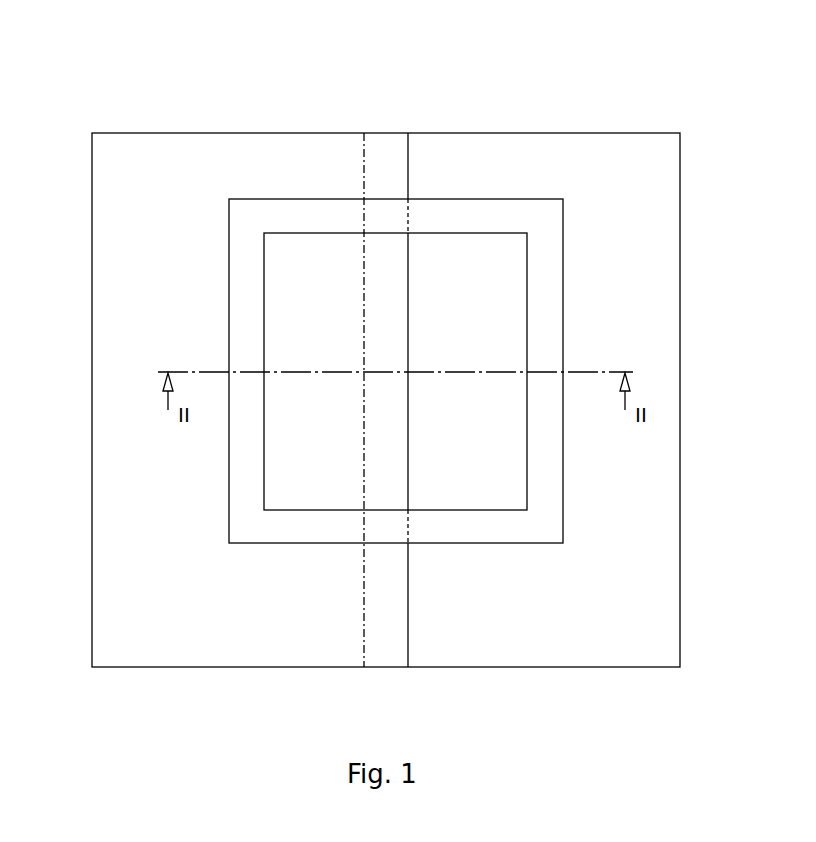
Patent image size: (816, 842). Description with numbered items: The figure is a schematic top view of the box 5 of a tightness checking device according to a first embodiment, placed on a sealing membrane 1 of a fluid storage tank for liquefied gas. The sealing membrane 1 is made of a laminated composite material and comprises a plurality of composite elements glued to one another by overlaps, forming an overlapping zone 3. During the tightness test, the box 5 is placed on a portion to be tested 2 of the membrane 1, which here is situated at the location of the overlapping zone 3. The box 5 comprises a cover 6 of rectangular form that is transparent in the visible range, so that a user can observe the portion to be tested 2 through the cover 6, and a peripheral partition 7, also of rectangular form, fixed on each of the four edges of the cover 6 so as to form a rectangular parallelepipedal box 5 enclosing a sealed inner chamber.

The sealing membrane 1 is at (594, 134).
The portion to be tested 2 is at (466, 283).
The overlapping zone 3 is at (388, 167).
The box 5 is at (567, 513).
The cover 6 is at (288, 296).
The peripheral partition 7 is at (313, 530).